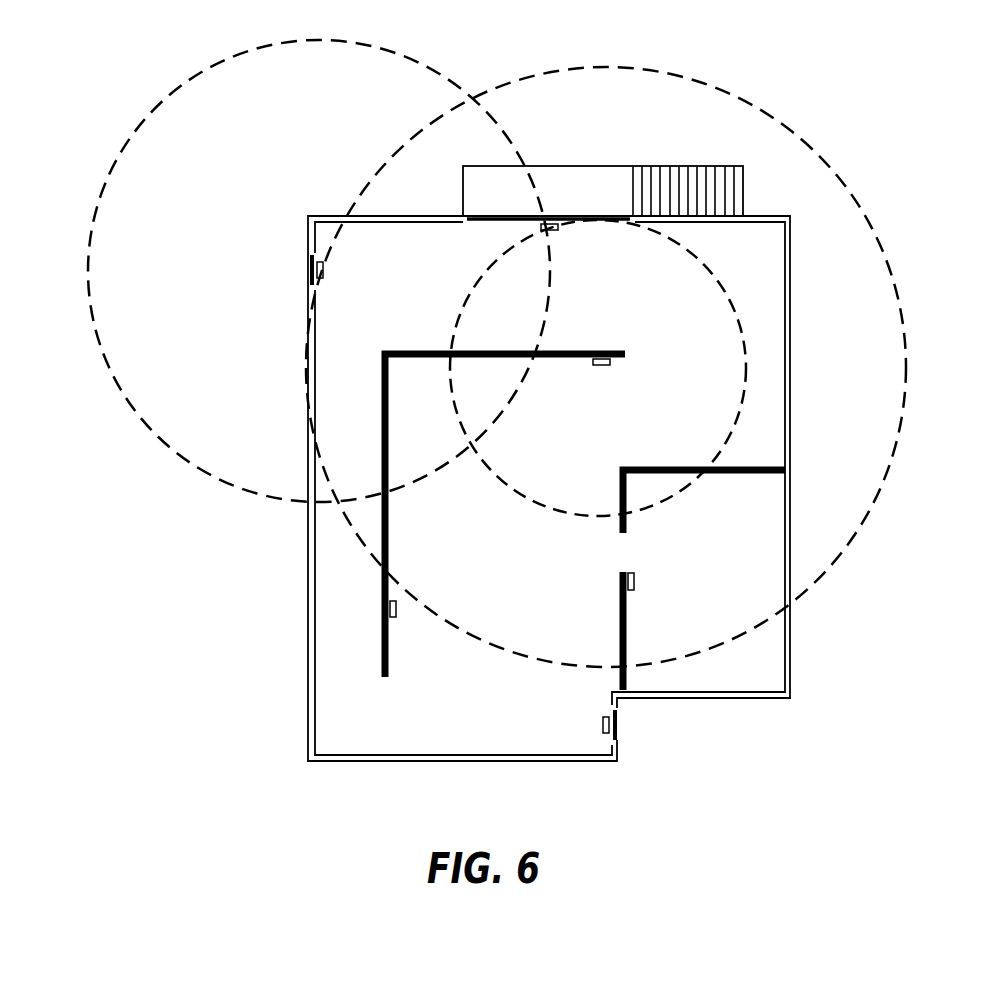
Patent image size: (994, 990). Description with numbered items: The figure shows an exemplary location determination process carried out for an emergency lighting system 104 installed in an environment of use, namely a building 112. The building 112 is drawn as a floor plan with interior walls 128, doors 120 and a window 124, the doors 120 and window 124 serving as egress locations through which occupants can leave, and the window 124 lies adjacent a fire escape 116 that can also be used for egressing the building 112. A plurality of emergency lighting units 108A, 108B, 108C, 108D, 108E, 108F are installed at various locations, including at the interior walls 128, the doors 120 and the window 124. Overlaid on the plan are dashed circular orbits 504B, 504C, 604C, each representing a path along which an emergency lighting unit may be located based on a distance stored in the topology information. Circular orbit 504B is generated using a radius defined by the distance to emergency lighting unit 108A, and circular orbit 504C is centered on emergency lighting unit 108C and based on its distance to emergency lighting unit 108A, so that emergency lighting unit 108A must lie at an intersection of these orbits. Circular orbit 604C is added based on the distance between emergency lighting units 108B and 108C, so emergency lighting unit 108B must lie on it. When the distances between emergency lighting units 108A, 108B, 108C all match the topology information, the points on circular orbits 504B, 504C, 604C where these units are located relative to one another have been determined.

The emergency lighting system 104 is at (246, 590).
The building 112 is at (440, 763).
The fire escape 116 is at (610, 201).
The door 120 is at (311, 262).
The window 124 is at (616, 222).
The interior wall 128 is at (462, 352).
The emergency lighting unit 108A is at (551, 232).
The emergency lighting unit 108B is at (324, 268).
The emergency lighting unit 108C is at (601, 367).
The emergency lighting unit 108D is at (635, 580).
The emergency lighting unit 108E is at (397, 610).
The emergency lighting unit 108F is at (602, 725).
The circular orbit 504B is at (108, 178).
The circular orbit 504C is at (500, 481).
The circular orbit 604C is at (466, 634).